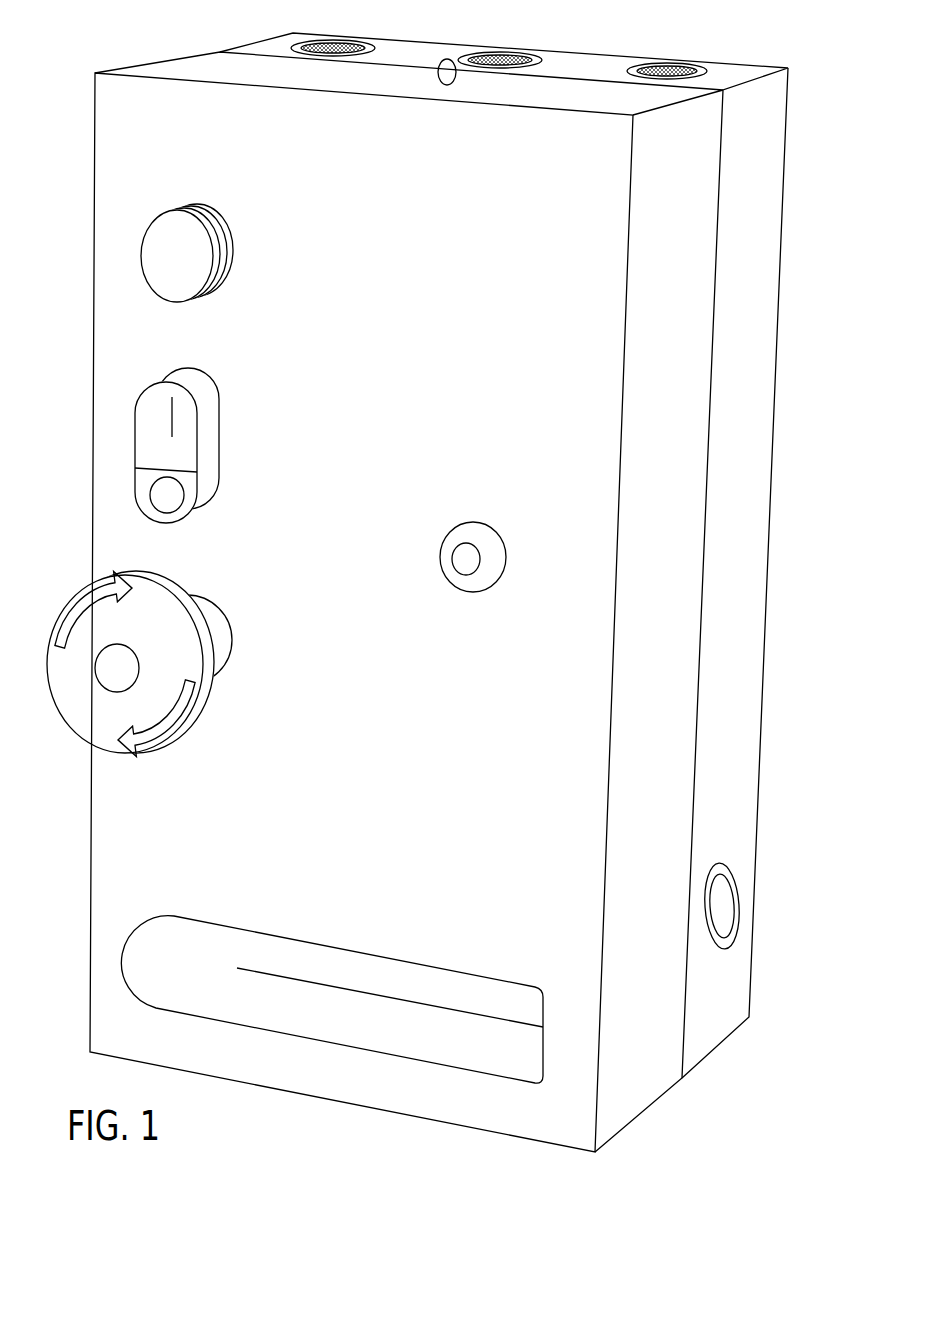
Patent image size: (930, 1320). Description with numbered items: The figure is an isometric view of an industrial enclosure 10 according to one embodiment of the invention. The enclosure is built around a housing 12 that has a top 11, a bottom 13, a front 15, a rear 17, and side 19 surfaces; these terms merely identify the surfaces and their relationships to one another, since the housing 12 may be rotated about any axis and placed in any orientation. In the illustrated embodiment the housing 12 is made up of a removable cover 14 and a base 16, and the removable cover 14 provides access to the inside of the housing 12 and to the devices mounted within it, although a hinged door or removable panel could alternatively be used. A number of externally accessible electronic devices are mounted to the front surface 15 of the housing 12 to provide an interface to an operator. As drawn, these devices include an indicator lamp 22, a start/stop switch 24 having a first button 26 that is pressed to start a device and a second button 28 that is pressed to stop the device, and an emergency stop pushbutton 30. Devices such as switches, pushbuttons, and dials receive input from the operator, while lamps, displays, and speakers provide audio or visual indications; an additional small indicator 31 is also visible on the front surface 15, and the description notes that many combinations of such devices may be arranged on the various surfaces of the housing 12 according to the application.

The industrial enclosure 10 is at (122, 47).
The top surface 11 is at (429, 58).
The housing 12 is at (575, 68).
The bottom surface 13 is at (413, 1118).
The removable cover 14 is at (659, 244).
The front surface 15 is at (431, 776).
The base 16 is at (738, 242).
The rear surface 17 is at (762, 757).
The side surface 19 is at (735, 814).
The indicator lamp 22 is at (140, 246).
The start/stop switch 24 is at (149, 443).
The first button 26 is at (182, 418).
The second button 28 is at (190, 485).
The emergency stop pushbutton 30 is at (126, 652).
The indicator 31 is at (473, 557).